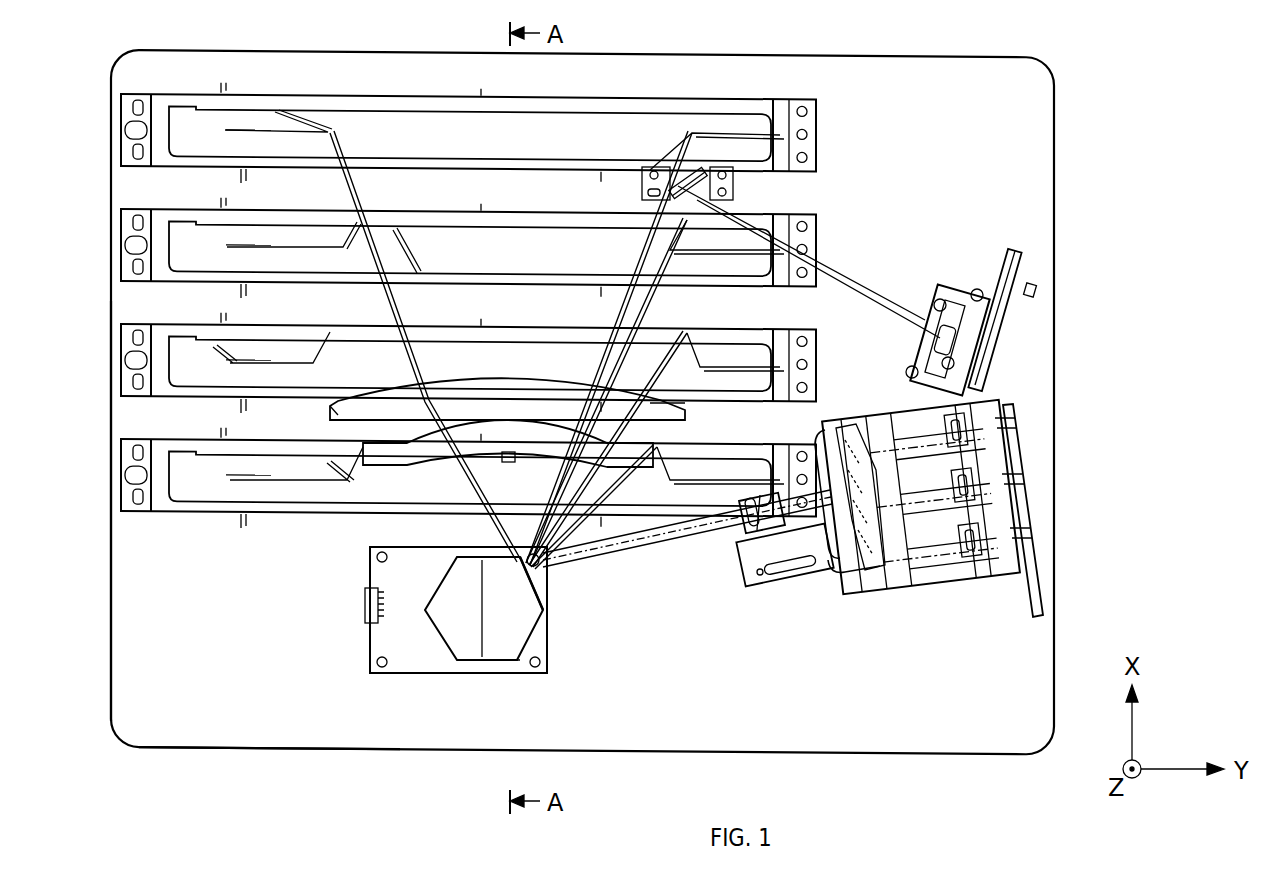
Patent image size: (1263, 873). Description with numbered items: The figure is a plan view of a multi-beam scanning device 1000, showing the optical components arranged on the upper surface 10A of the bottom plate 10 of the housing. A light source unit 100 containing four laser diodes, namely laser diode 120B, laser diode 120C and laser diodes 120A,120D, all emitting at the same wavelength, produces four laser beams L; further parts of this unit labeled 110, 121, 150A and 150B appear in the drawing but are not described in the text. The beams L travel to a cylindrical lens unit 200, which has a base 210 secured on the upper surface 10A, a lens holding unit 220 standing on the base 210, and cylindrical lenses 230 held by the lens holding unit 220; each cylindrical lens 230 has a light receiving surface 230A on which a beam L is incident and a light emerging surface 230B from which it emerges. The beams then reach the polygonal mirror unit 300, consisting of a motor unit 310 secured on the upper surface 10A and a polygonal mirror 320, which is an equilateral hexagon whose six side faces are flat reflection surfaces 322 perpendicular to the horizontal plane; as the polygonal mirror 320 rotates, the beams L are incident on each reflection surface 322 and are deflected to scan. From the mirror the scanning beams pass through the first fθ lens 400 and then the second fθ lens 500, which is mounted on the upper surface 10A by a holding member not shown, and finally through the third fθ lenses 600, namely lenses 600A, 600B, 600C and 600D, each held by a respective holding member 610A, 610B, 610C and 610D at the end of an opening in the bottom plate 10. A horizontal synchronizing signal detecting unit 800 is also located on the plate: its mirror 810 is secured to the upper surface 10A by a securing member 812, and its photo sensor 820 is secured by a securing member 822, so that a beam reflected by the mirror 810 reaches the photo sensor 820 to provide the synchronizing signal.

The multi-beam scanning device 1000 is at (1078, 95).
The bottom plate 10 is at (111, 602).
The upper surface 10A is at (143, 661).
The third fθ lenses 600 is at (523, 295).
The third fθ lens 600A is at (365, 117).
The third fθ lens 600B is at (258, 234).
The third fθ lens 600C is at (463, 348).
The third fθ lens 600D is at (255, 463).
The holding member 610A is at (672, 116).
The holding member 610B is at (548, 235).
The holding member 610C is at (716, 352).
The holding member 610D is at (686, 470).
The mirror 810 is at (680, 178).
The securing member 812 is at (733, 190).
The horizontal synchronizing signal detecting unit 800 is at (977, 306).
The photo sensor 820 is at (980, 343).
The securing member 822 is at (1012, 260).
The second fθ lens 500 is at (548, 378).
The first fθ lens 400 is at (382, 468).
The polygonal mirror unit 300 is at (483, 639).
The motor unit 310 is at (460, 675).
The polygonal mirror 320 is at (499, 605).
The reflection surface 322 is at (535, 588).
The cylindrical lens unit 200 is at (748, 566).
The base 210 is at (830, 582).
The lens holding unit 220 is at (758, 588).
The cylindrical lens 230 is at (724, 540).
The light receiving surface 230A is at (742, 535).
The light emerging surface 230B is at (745, 535).
The light source unit 100 is at (977, 539).
The holder 110 is at (966, 583).
The laser diode 120C is at (960, 450).
The laser diodes 120A,120D is at (970, 501).
The laser diode 120B is at (975, 556).
The cover plate 121 is at (1033, 603).
The cylindrical lens 150A is at (842, 578).
The cylindrical lens 150B is at (828, 443).
The laser beam L is at (570, 470).